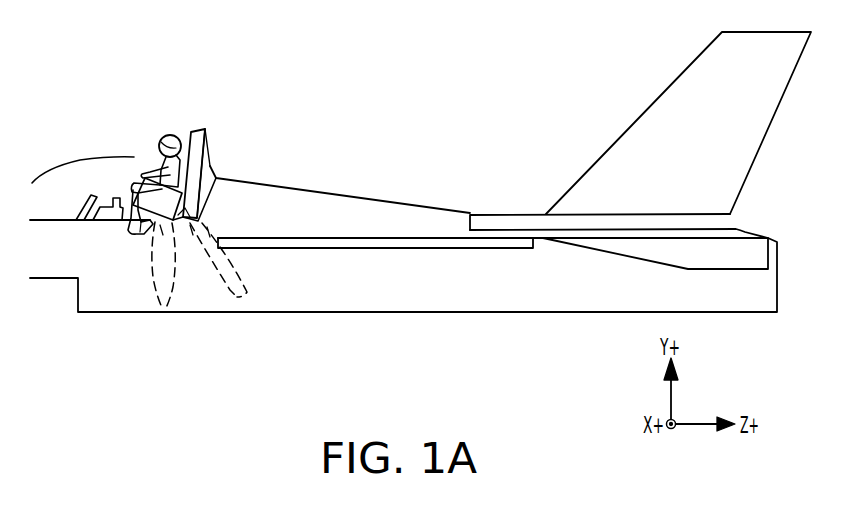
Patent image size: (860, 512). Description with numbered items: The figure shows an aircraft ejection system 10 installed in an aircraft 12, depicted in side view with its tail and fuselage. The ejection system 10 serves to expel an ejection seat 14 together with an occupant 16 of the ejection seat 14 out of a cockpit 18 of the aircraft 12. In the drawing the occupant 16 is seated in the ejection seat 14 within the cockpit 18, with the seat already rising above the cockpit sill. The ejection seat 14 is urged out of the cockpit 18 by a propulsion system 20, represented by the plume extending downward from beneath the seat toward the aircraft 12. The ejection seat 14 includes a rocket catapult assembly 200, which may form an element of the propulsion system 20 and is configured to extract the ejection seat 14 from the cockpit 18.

The aircraft ejection system 10 is at (333, 105).
The aircraft 12 is at (438, 288).
The ejection seat 14 is at (203, 149).
The occupant 16 is at (158, 137).
The cockpit 18 is at (67, 205).
The propulsion system 20 is at (162, 266).
The rocket catapult assembly 200 is at (191, 178).